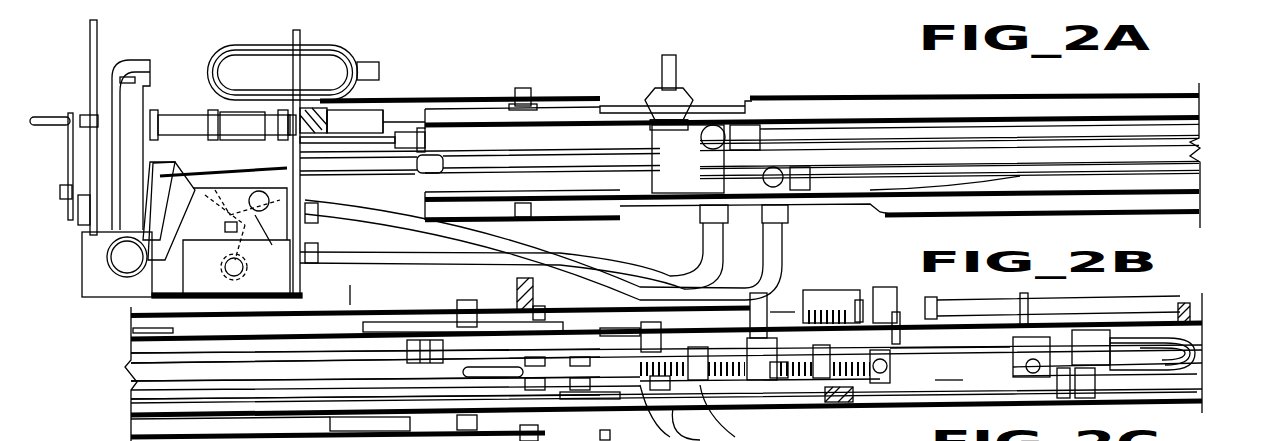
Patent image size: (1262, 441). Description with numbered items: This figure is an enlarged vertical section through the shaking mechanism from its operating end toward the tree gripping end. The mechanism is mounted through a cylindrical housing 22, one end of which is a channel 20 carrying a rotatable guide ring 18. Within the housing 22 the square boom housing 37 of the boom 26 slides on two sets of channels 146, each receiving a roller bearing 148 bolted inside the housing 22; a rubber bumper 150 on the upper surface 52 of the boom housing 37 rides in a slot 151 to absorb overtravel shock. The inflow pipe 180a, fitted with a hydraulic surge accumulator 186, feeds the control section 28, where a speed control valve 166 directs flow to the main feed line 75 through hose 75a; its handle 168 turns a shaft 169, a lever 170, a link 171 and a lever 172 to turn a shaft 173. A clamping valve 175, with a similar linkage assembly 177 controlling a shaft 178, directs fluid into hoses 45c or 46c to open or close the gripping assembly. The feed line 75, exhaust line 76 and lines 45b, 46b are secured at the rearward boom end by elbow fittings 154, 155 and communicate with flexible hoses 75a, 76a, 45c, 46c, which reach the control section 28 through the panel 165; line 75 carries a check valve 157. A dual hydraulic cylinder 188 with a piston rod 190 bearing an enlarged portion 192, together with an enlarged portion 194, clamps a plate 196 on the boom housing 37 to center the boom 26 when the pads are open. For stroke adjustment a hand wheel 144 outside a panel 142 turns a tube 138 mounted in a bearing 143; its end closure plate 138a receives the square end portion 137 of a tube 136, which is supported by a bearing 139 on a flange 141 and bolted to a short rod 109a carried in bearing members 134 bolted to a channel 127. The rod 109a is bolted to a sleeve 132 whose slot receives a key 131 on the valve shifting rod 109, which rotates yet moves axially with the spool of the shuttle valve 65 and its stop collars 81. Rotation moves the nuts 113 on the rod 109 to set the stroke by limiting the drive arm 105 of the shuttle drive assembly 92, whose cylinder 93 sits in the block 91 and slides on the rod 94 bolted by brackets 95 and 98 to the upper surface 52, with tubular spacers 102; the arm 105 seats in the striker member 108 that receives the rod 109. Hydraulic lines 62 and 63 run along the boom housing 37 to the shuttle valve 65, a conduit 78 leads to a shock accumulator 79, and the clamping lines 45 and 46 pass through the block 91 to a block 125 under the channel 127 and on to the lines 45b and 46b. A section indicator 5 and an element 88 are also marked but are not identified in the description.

In FIG. 2A, the panel 142 is at (90, 52).
In FIG. 2A, the hand wheel 144 is at (58, 116).
In FIG. 2A, the handle 168 is at (118, 98).
In FIG. 2A, the hydraulic surge accumulator 186 is at (255, 48).
In FIG. 2A, the control section 28 is at (362, 62).
In FIG. 2A, the inflow pipe 180a is at (190, 124).
In FIG. 2A, the link 171 is at (242, 125).
In FIG. 2A, the panel 165 is at (300, 35).
In FIG. 2A, the shaft 169 is at (122, 257).
In FIG. 2A, the lever 170 is at (150, 212).
In FIG. 2A, the bearing 143 is at (80, 210).
In FIG. 2A, the second tube 138 is at (62, 186).
In FIG. 2A, the lever 172 is at (290, 168).
In FIG. 2A, the mechanical linkage assembly 177 is at (212, 241).
In FIG. 2A, the shaft 178 is at (230, 268).
In FIG. 2A, the shaft 173 is at (283, 262).
In FIG. 2A, the speed control valve 166 is at (318, 205).
In FIG. 2A, the clamping valve 175 is at (318, 250).
In FIG. 2A, the piston rod 190 is at (355, 119).
In FIG. 2A, the dual hydraulic cylinder 188 is at (340, 110).
In FIG. 2A, the enlarged portion 194 is at (390, 110).
In FIG. 2A, the plate 196 is at (428, 113).
In FIG. 2A, the enlarged portion 192 is at (425, 142).
In FIG. 2A, the end portion 137 is at (606, 156).
In FIG. 2A, the end closure plate 138a is at (540, 155).
In FIG. 2A, the bearing 139 is at (608, 172).
In FIG. 2A, the roller bearing 148 is at (550, 92).
In FIG. 2B, the roller bearing 148 is at (455, 310).
In FIG. 2A, the channels 146 is at (603, 105).
In FIG. 2B, the channels 146 is at (330, 342).
In FIG. 2A, the cylindrical housing 22 is at (930, 95).
In FIG. 2B, the cylindrical housing 22 is at (265, 318).
In FIG. 2A, the boom 26 is at (977, 112).
In FIG. 2B, the boom 26 is at (1113, 324).
In FIG. 2A, the main feed line 75 is at (1145, 135).
In FIG. 2B, the main feed line 75 is at (150, 355).
In FIG. 2A, the exhaust line 76 is at (870, 128).
In FIG. 2B, the exhaust line 76 is at (897, 375).
In FIG. 2A, the elbow fittings 154 is at (720, 130).
In FIG. 2A, the elbow fittings 155 is at (778, 170).
In FIG. 2A, the flange 141 is at (660, 185).
In FIG. 2A, the rubber bumper 150 is at (688, 88).
In FIG. 2A, the slot 151 is at (748, 102).
In FIG. 2A, the tube 136 is at (1175, 156).
In FIG. 2B, the tube 136 is at (170, 378).
In FIG. 2A, the line 45b is at (1018, 176).
In FIG. 2A, the line 46b is at (1185, 180).
In FIG. 2B, the line 46b is at (158, 403).
In FIG. 2A, the boom housing 37 is at (1190, 197).
In FIG. 2B, the boom housing 37 is at (140, 424).
In FIG. 2A, the hose 75a is at (700, 255).
In FIG. 2A, the hose 76a is at (690, 250).
In FIG. 2A, the hose 45c is at (782, 232).
In FIG. 2A, the hose 46c is at (780, 260).
In FIG. 2B, the section line 5 is at (384, 296).
In FIG. 2B, the guide ring 18 is at (517, 300).
In FIG. 2B, the channel 20 is at (538, 312).
In FIG. 2B, the bracket 98 is at (616, 320).
In FIG. 2B, the rod 94 is at (648, 322).
In FIG. 2B, the drive arm 105 is at (750, 323).
In FIG. 2B, the tubular spacers 102 is at (968, 290).
In FIG. 2B, the shuttle drive assembly 92 is at (828, 291).
In FIG. 2B, the cylinder 93 is at (829, 301).
In FIG. 2B, the block 91 is at (850, 303).
In FIG. 2B, the bracket 95 is at (1020, 305).
In FIG. 2B, the conduit 78 is at (1072, 335).
In FIG. 2B, the hydraulic fluid line 46 is at (1097, 330).
In FIG. 2B, the stop 88 is at (1190, 312).
In FIG. 2B, the shock accumulator 79 is at (1185, 345).
In FIG. 2B, the line 63 is at (1185, 380).
In FIG. 2B, the hydraulic line 62 is at (1030, 380).
In FIG. 2B, the stop collars 81 is at (1015, 353).
In FIG. 2B, the hydraulic fluid line 45 is at (896, 322).
In FIG. 2B, the shuttle valve 65 is at (949, 369).
In FIG. 2B, the block 125 is at (840, 402).
In FIG. 2B, the valve shifting rod 109 is at (778, 378).
In FIG. 2B, the nut 113 is at (813, 352).
In FIG. 2B, the striker member 108 is at (748, 365).
In FIG. 2B, the key 131 is at (660, 362).
In FIG. 2B, the bearing members 134 is at (530, 360).
In FIG. 2B, the check valve 157 is at (445, 355).
In FIG. 2B, the short rod 109a is at (610, 415).
In FIG. 2B, the sleeve 132 is at (655, 390).
In FIG. 2B, the channel 127 is at (591, 433).
In FIG. 2B, the upper surface of boom housing 52 is at (170, 336).